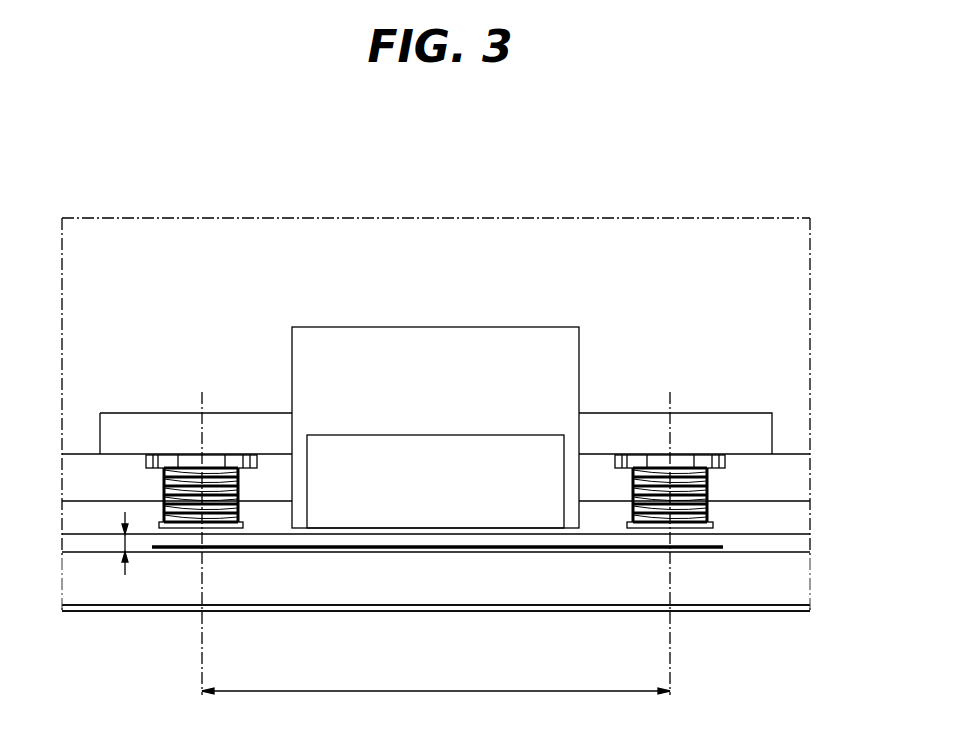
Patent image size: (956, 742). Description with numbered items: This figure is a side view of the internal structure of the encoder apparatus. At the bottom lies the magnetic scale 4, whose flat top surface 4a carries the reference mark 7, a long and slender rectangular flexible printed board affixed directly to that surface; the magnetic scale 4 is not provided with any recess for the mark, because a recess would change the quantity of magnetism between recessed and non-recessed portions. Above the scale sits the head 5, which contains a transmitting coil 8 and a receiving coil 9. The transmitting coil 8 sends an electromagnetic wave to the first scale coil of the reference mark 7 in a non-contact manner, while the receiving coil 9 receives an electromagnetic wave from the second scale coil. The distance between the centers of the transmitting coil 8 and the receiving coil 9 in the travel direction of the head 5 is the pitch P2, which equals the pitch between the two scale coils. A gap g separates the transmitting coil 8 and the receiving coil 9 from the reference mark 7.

The magnetic scale 4 is at (694, 590).
The top surface 4a is at (740, 553).
The head 5 is at (437, 246).
The reference mark 7 is at (560, 550).
The transmitting coil 8 is at (216, 480).
The receiving coil 9 is at (685, 480).
The gap g is at (125, 543).
The pitch P2 is at (436, 676).